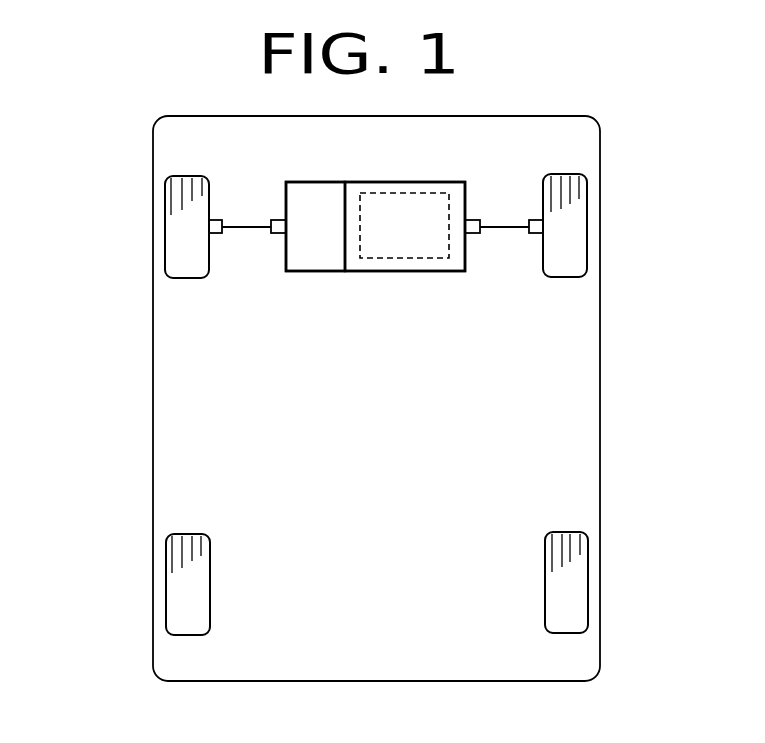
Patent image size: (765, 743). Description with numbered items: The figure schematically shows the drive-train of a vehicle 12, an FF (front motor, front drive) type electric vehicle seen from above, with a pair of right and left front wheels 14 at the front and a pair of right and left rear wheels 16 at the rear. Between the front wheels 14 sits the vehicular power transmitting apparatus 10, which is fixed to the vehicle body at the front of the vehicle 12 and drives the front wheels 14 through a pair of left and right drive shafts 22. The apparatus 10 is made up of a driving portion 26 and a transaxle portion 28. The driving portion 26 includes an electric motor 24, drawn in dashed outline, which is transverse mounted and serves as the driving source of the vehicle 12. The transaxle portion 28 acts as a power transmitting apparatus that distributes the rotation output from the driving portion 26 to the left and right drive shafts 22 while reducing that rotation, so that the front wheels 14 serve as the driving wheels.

The vehicular power transmitting apparatus 10 is at (424, 332).
The vehicle 12 is at (106, 173).
The front wheels 14 is at (173, 233).
The rear wheels 16 is at (177, 591).
The drive shafts 22 is at (238, 228).
The electric motor 24 is at (427, 193).
The driving portion 26 is at (397, 265).
The transaxle portion 28 is at (322, 265).